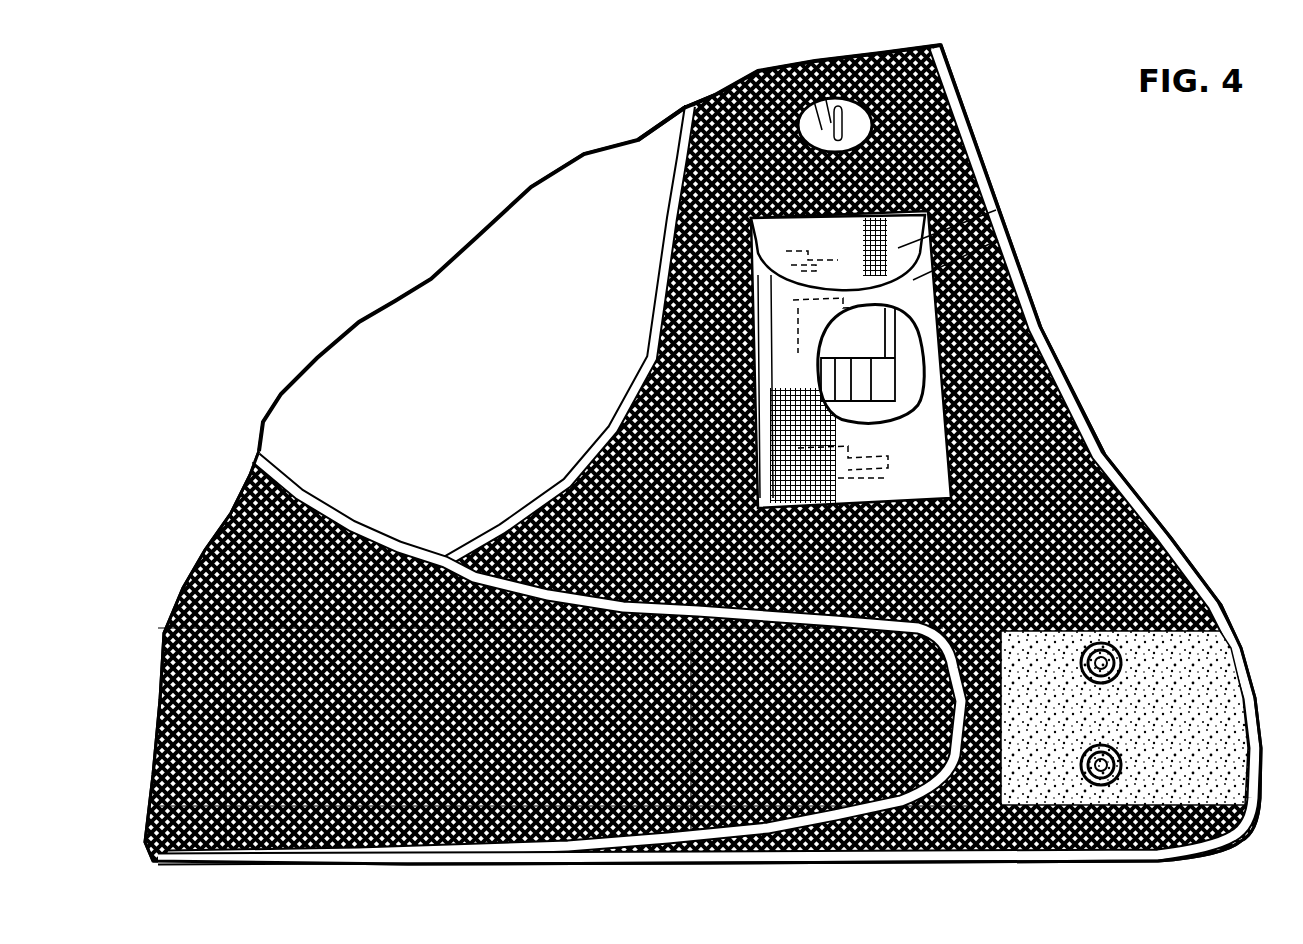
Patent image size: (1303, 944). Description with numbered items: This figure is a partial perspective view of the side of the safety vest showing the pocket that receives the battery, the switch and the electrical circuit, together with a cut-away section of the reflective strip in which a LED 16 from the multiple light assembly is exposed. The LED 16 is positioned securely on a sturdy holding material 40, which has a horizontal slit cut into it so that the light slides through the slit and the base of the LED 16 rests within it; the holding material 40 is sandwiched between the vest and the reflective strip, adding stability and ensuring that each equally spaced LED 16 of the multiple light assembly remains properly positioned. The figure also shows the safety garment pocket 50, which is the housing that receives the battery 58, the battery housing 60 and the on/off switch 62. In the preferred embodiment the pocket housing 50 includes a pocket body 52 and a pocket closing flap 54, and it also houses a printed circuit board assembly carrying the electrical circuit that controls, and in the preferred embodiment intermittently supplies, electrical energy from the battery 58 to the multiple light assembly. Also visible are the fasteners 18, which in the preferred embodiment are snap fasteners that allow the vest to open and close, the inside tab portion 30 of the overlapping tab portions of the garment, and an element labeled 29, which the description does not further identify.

The LED 16 is at (820, 52).
The fasteners 18 is at (1107, 647).
The collar binding 29 is at (745, 822).
The inside tab portion 30 is at (807, 827).
The holding material 40 is at (780, 56).
The safety garment pocket 50 is at (988, 233).
The pocket body 52 is at (1033, 349).
The pocket closing flap 54 is at (985, 204).
The battery 58 is at (890, 400).
The battery housing 60 is at (877, 420).
The on/off switch 62 is at (803, 240).